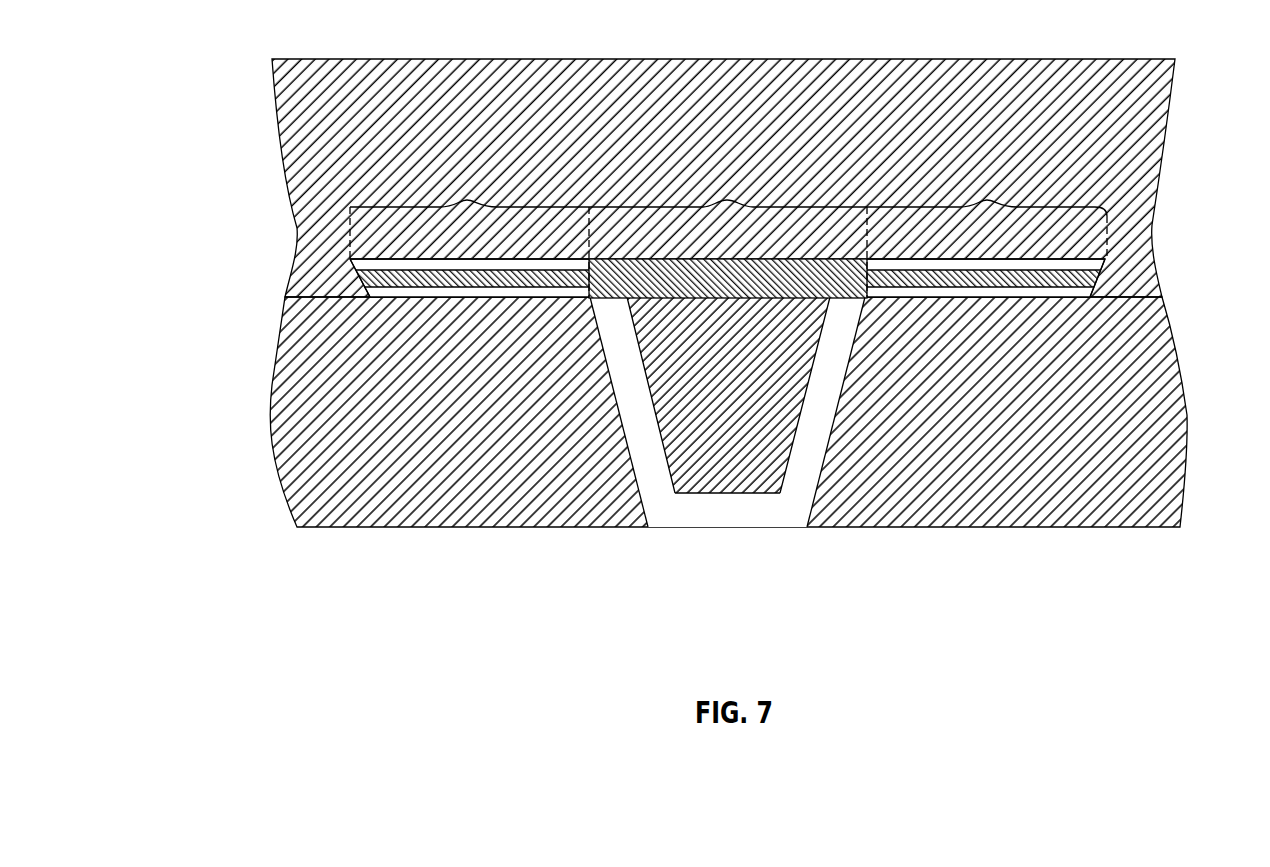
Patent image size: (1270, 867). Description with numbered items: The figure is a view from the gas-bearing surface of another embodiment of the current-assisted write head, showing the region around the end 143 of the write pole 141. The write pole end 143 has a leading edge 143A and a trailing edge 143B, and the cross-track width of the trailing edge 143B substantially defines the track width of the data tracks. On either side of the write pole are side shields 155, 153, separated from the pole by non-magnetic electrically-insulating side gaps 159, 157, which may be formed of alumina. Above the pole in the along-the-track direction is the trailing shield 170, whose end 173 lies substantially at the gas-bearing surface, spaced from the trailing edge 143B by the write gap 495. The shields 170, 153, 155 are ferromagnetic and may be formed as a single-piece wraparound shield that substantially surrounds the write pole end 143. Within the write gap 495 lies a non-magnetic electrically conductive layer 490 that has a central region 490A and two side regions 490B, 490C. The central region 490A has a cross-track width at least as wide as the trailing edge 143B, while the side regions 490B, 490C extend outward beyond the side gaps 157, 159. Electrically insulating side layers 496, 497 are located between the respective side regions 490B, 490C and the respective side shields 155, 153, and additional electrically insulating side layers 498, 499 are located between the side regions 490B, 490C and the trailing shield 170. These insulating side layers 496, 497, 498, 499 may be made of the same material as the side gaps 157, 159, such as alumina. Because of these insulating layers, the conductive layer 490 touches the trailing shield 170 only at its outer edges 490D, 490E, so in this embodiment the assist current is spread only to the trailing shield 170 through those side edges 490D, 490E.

The write pole 141 is at (721, 412).
The write pole end 143 is at (728, 441).
The leading edge 143A is at (703, 495).
The trailing edge 143B is at (755, 303).
The side shield 153 is at (1162, 420).
The side shield 155 is at (735, 412).
The side gap 157 is at (821, 427).
The side gap 159 is at (637, 435).
The trailing shield 170 is at (968, 59).
The end of trailing shield 173 is at (753, 155).
The conductive layer 490 is at (727, 266).
The central region 490A is at (728, 232).
The side region 490B is at (469, 212).
The side region 490C is at (987, 213).
The edge 490D is at (362, 277).
The edge 490E is at (1093, 284).
The write gap 495 is at (772, 266).
The electrically insulating side layer 496 is at (445, 292).
The electrically insulating side layer 497 is at (1018, 290).
The electrically insulating side layer 498 is at (445, 263).
The electrically insulating side layer 499 is at (1015, 256).